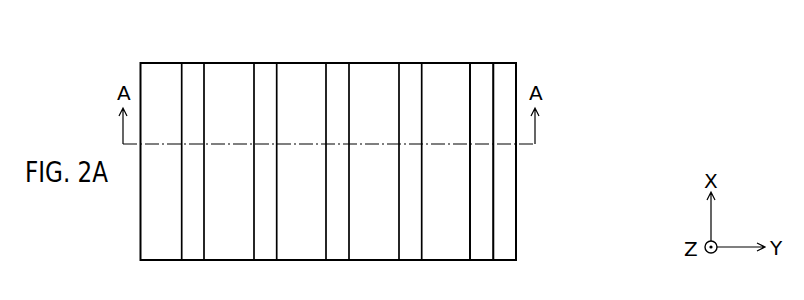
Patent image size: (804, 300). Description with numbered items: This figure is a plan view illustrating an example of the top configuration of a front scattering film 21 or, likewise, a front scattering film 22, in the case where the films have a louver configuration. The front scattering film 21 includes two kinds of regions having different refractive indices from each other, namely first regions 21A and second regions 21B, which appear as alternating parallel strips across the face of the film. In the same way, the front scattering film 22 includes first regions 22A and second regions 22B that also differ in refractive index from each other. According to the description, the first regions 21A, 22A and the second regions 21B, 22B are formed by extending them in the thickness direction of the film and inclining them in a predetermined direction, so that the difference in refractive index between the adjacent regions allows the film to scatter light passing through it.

The front scattering film 21 is at (389, 138).
The front scattering film 22 is at (389, 138).
The first region 21A is at (405, 161).
The first region 22A is at (448, 167).
The second region 21B is at (549, 161).
The second region 22B is at (483, 232).